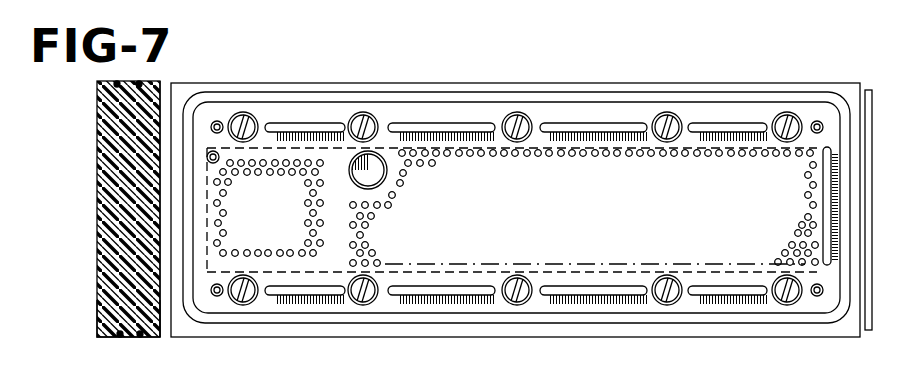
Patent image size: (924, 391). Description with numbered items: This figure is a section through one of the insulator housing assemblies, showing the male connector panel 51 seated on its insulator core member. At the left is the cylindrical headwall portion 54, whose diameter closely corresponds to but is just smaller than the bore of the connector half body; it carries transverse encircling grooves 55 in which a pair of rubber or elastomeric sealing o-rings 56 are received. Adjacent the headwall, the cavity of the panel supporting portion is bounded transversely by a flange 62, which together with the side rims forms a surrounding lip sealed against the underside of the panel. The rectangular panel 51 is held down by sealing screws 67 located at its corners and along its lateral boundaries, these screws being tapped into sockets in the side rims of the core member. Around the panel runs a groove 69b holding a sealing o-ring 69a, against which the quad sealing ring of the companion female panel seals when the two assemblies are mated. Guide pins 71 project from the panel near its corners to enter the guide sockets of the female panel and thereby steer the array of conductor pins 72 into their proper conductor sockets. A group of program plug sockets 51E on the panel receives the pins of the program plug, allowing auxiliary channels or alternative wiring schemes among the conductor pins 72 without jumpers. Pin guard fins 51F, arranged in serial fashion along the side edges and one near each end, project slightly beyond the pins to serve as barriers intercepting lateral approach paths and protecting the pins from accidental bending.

The male connector panel 51 is at (322, 87).
The program plug sockets 51E is at (280, 252).
The pin guard fins 51F is at (673, 163).
The headwall portion 54 is at (100, 155).
The transverse encircling grooves 55 is at (117, 325).
The sealing o-rings 56 is at (140, 340).
The flange 62 is at (167, 107).
The sealing screws 67 is at (377, 125).
The sealing o-ring 69a is at (587, 320).
The groove 69b is at (440, 322).
The guide pins 71 is at (217, 297).
The conductor pins 72 is at (365, 245).